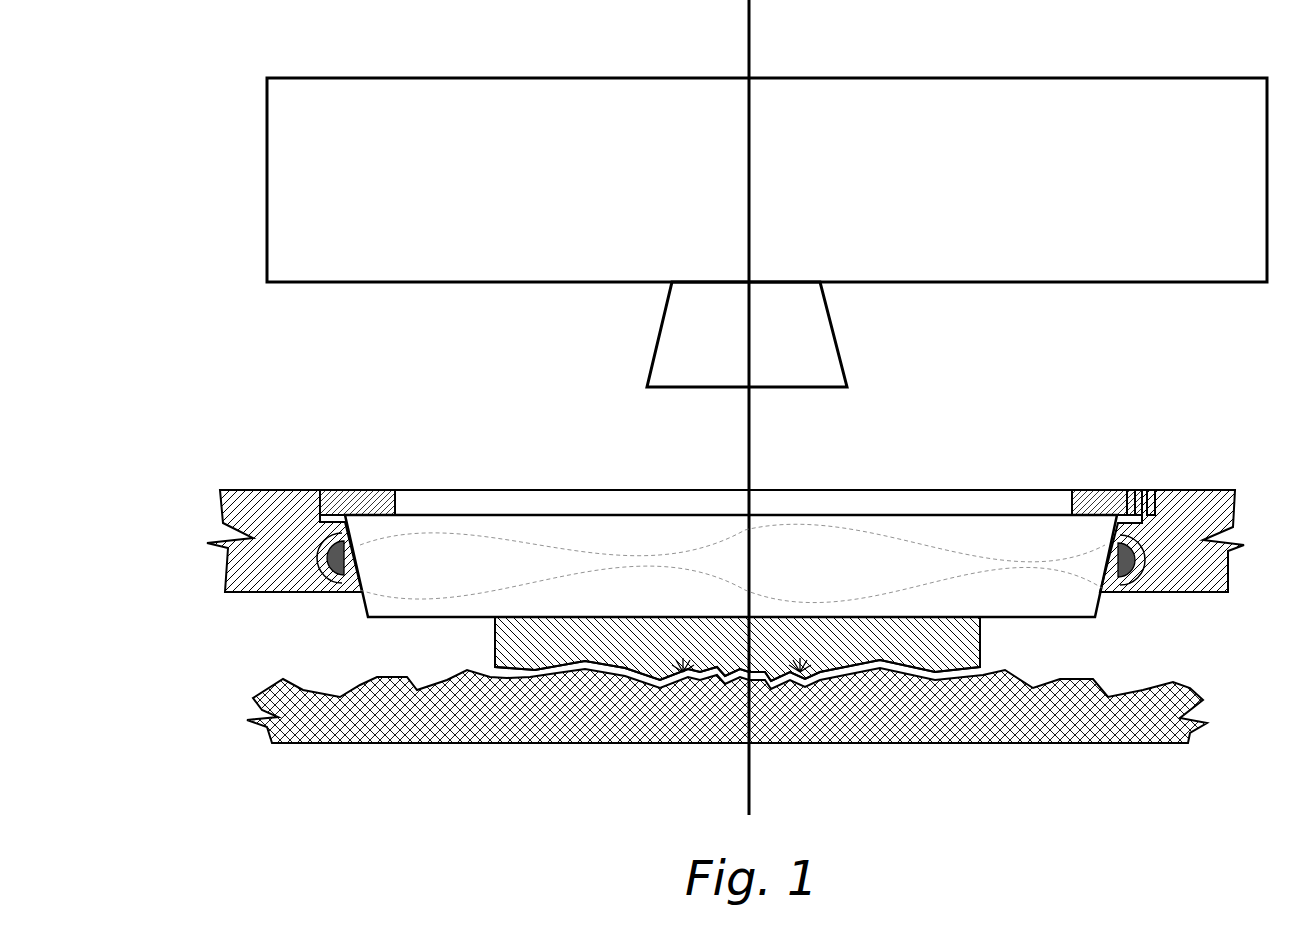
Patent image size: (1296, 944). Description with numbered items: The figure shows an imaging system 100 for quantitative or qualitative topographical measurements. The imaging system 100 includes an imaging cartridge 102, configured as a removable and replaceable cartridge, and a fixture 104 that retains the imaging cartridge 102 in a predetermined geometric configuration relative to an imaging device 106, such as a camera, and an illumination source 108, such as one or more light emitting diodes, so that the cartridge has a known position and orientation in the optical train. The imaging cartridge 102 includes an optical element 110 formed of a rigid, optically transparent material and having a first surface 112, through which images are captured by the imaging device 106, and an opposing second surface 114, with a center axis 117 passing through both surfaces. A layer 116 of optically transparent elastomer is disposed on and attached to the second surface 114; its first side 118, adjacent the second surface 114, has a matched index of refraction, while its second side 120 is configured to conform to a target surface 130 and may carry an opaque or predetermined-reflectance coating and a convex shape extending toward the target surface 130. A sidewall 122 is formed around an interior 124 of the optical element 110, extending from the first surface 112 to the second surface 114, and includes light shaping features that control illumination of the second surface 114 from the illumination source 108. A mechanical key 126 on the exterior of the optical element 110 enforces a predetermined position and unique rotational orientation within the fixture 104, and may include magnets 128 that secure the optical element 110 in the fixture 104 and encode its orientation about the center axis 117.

The imaging system 100 is at (112, 402).
The imaging cartridge 102 is at (578, 472).
The fixture 104 is at (297, 490).
The imaging device 106 is at (838, 355).
The illumination source 108 is at (1130, 562).
The optical element 110 is at (903, 515).
The first surface 112 is at (805, 516).
The second surface 114 is at (1027, 621).
The layer of optically transparent elastomer 116 is at (495, 640).
The center axis 117 is at (749, 42).
The first side 118 is at (783, 618).
The second side 120 is at (895, 662).
The sidewall 122 is at (367, 604).
The interior 124 is at (731, 566).
The mechanical key 126 is at (347, 490).
The magnets 128 is at (1127, 490).
The target surface 130 is at (727, 705).